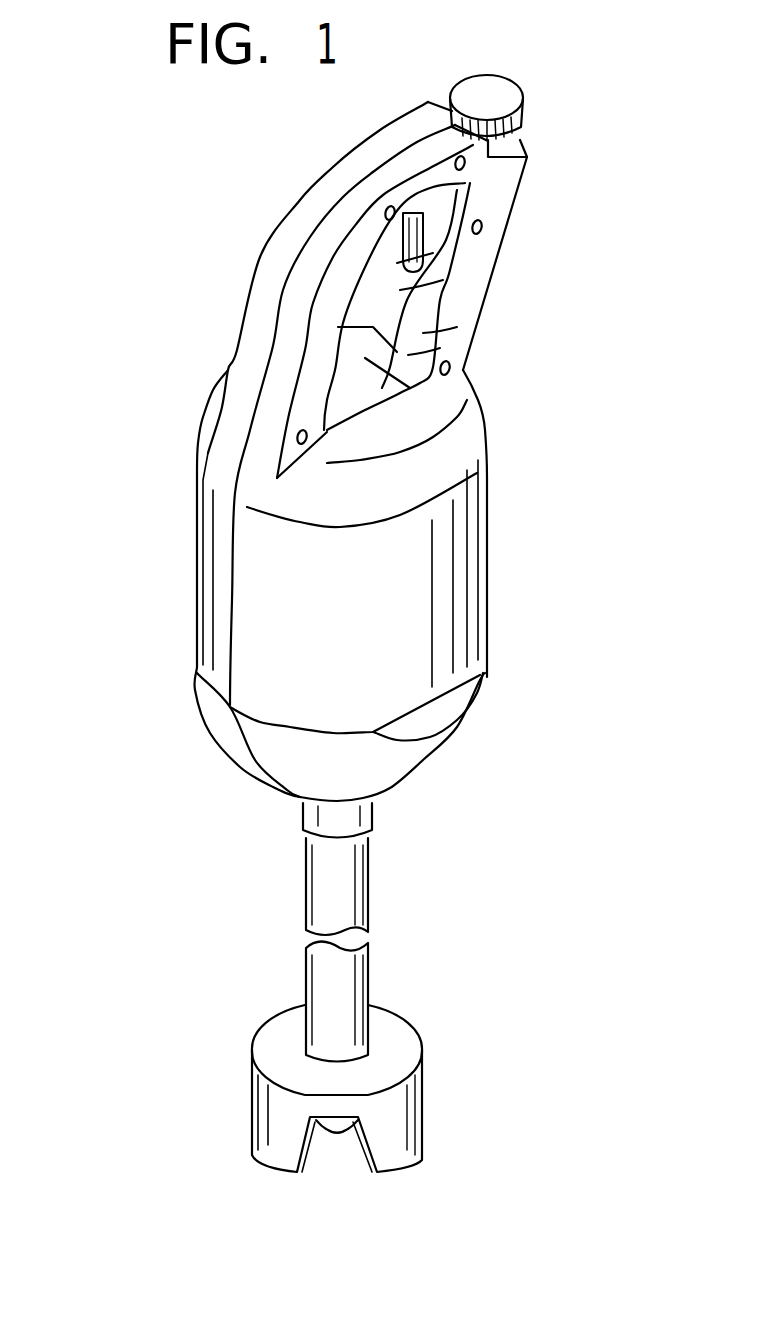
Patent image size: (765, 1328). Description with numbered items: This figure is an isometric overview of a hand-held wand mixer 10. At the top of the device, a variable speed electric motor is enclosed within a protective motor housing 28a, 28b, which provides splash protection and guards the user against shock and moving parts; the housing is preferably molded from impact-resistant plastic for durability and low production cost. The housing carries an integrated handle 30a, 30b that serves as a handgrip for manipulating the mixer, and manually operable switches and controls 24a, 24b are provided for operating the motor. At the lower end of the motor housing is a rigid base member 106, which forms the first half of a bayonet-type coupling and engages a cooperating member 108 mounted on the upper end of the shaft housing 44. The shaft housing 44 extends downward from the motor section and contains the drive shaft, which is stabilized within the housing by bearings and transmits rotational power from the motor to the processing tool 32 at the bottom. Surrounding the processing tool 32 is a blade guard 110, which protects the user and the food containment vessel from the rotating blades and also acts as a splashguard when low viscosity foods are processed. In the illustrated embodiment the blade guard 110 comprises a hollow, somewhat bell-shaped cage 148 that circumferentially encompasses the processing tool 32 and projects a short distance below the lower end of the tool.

The hand-held wand mixer 10 is at (158, 345).
The manually operable switch and control 24a is at (512, 98).
The manually operable switch and control 24b is at (417, 247).
The integrated handle 30a is at (400, 290).
The integrated handle 30b is at (427, 333).
The motor housing 28a is at (210, 570).
The motor housing 28b is at (462, 602).
The rigid base member 106 is at (460, 740).
The cooperating member 108 is at (385, 800).
The shaft housing 44 is at (370, 910).
The blade guard 110 is at (428, 1035).
The bell-shaped cage 148 is at (283, 1112).
The processing tool 32 is at (333, 1147).